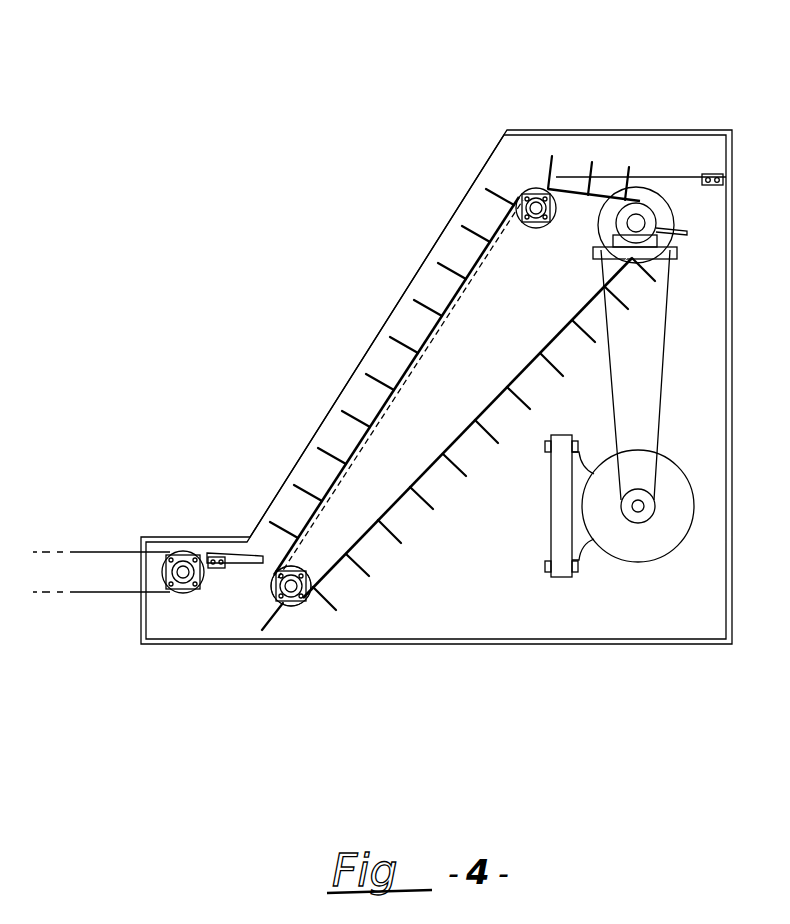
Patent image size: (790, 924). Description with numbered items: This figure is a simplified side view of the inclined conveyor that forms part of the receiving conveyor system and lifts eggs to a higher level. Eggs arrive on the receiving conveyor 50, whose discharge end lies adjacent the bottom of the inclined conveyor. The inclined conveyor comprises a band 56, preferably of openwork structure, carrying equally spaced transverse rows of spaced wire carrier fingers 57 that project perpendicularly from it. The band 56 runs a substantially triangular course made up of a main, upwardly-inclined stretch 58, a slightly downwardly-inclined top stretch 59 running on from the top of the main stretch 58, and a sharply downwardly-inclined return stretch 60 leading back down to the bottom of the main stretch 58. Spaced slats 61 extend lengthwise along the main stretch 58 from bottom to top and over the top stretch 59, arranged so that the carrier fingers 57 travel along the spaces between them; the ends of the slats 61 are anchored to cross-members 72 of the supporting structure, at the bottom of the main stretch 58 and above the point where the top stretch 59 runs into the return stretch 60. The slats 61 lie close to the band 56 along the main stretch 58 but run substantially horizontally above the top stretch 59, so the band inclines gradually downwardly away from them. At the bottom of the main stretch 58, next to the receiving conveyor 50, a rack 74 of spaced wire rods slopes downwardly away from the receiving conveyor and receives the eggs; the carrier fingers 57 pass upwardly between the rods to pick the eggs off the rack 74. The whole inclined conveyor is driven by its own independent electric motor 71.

The receiving conveyor 50 is at (118, 551).
The band 56 is at (515, 208).
The carrier fingers 57 is at (367, 372).
The main stretch 58 is at (377, 420).
The top stretch 59 is at (574, 193).
The return stretch 60 is at (385, 515).
The slats 61 is at (467, 257).
The electric motor 71 is at (653, 543).
The cross-members 72 is at (711, 174).
The rack 74 is at (243, 561).